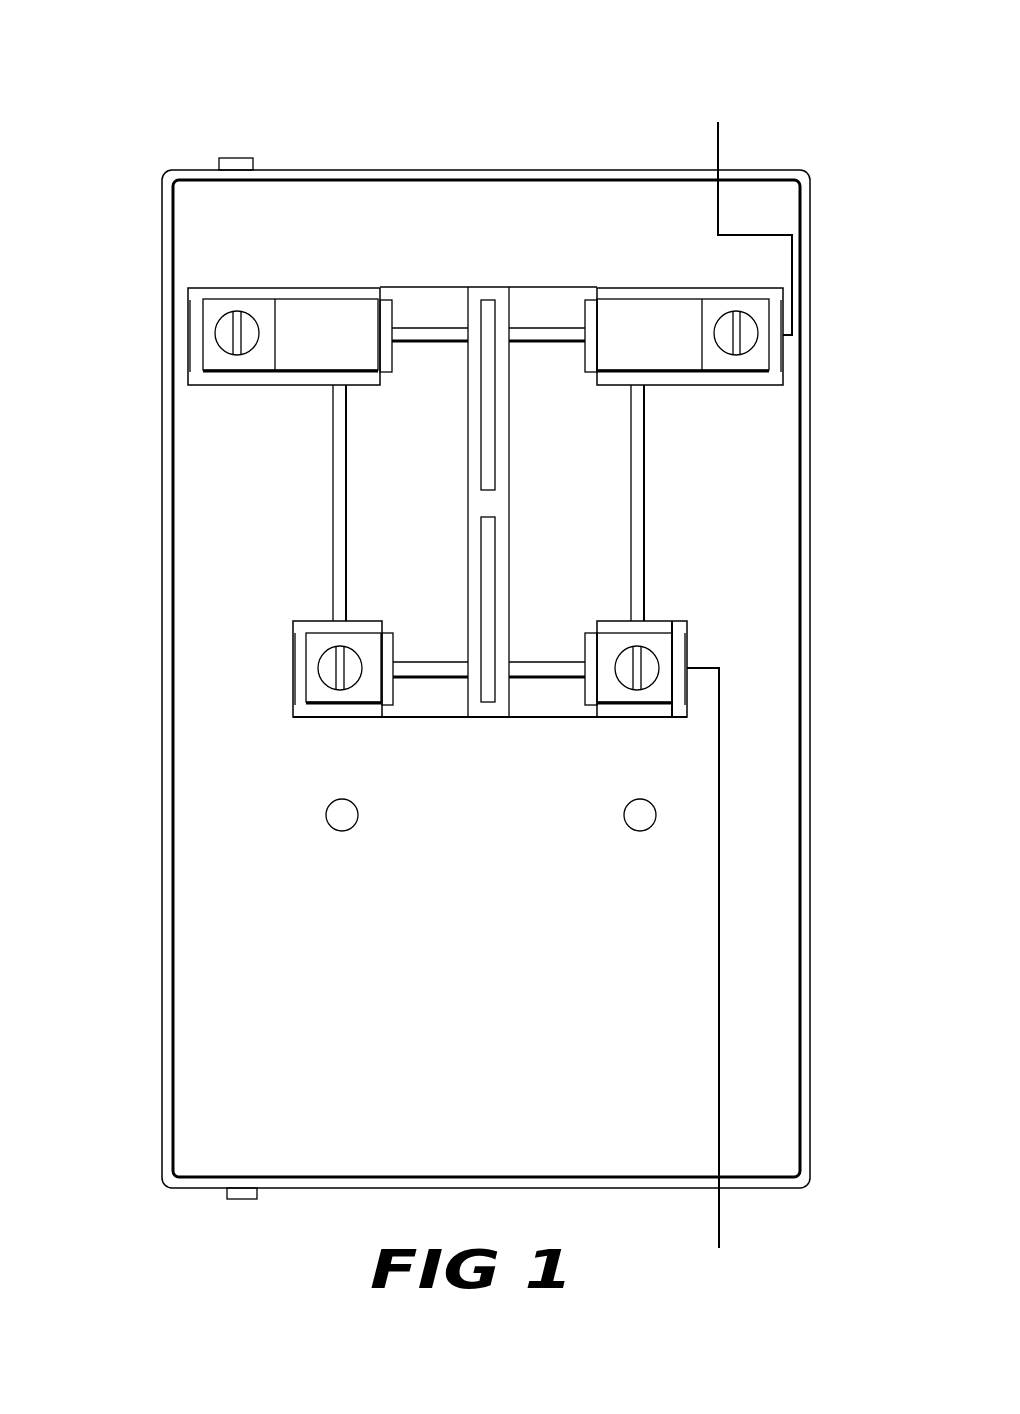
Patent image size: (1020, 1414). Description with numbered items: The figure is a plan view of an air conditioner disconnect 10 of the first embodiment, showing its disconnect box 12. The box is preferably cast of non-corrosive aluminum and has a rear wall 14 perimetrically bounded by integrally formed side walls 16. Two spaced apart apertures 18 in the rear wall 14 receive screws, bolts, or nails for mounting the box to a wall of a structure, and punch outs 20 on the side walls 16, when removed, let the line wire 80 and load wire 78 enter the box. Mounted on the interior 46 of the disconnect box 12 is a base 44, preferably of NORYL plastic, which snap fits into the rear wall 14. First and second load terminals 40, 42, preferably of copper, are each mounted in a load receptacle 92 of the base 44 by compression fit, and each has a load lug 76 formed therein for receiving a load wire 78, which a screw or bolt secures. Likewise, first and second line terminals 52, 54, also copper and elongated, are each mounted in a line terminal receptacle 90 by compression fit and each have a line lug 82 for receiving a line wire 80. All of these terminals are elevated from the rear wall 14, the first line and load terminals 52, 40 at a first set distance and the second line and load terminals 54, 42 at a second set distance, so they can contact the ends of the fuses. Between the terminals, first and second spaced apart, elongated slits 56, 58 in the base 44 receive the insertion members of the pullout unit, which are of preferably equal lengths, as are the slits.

The air conditioner disconnect 10 is at (281, 45).
The disconnect box 12 is at (130, 188).
The rear wall 14 is at (432, 999).
The side walls 16 is at (490, 170).
The apertures 18 is at (355, 829).
The punch outs 20 is at (257, 166).
The first load terminal 40 is at (318, 636).
The second load terminal 42 is at (655, 632).
The base 44 is at (502, 735).
The interior 46 is at (213, 992).
The first line terminal 52 is at (262, 301).
The second line terminal 54 is at (709, 301).
The first elongated slit 56 is at (495, 385).
The second elongated slit 58 is at (495, 547).
The load lug 76 is at (308, 694).
The load wire 78 is at (718, 1042).
The line wire 80 is at (718, 141).
The line lug 82 is at (262, 362).
The line terminal receptacle 90 is at (190, 333).
The load receptacle 92 is at (298, 661).